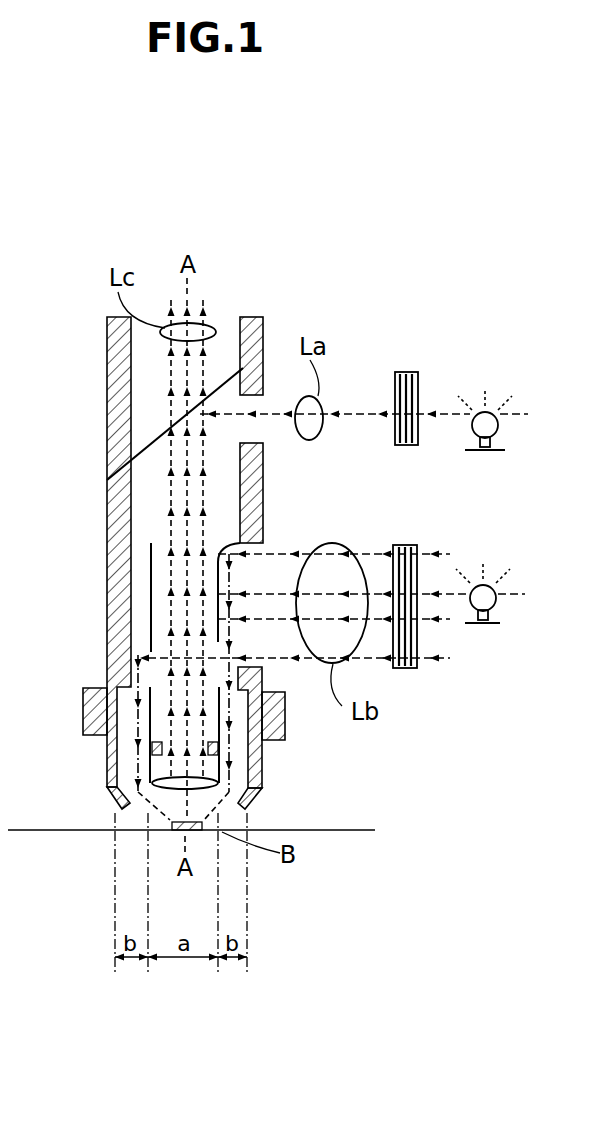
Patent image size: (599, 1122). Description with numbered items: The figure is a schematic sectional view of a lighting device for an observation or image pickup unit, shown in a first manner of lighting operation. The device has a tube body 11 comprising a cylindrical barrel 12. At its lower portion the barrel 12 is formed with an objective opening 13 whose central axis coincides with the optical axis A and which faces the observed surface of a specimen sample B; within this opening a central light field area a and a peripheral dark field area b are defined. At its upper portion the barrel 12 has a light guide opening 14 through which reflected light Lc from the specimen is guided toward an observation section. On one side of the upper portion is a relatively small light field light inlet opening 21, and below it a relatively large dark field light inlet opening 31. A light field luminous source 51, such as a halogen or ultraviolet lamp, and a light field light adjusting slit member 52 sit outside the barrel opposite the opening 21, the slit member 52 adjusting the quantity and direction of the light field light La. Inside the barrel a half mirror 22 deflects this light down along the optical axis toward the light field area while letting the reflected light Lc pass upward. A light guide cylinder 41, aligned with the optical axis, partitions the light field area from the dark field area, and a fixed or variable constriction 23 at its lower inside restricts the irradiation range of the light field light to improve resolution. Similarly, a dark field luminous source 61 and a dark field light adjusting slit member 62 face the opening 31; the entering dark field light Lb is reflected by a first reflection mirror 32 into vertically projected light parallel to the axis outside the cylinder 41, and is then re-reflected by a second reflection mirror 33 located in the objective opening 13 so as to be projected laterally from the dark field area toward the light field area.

The tube body 11 is at (84, 383).
The cylindrical barrel 12 is at (107, 480).
The objective opening 13 is at (140, 814).
The light guide opening 14 is at (228, 328).
The light field light inlet opening 21 is at (263, 437).
The half mirror 22 is at (148, 446).
The constriction 23 is at (218, 748).
The dark field light inlet opening 31 is at (247, 572).
The first reflection mirror 32 is at (150, 648).
The second reflection mirror 33 is at (246, 798).
The light guide cylinder 41 is at (150, 606).
The light field luminous source 51 is at (487, 412).
The light field light adjusting slit member 52 is at (408, 445).
The dark field luminous source 61 is at (487, 585).
The dark field light adjusting slit member 62 is at (405, 668).